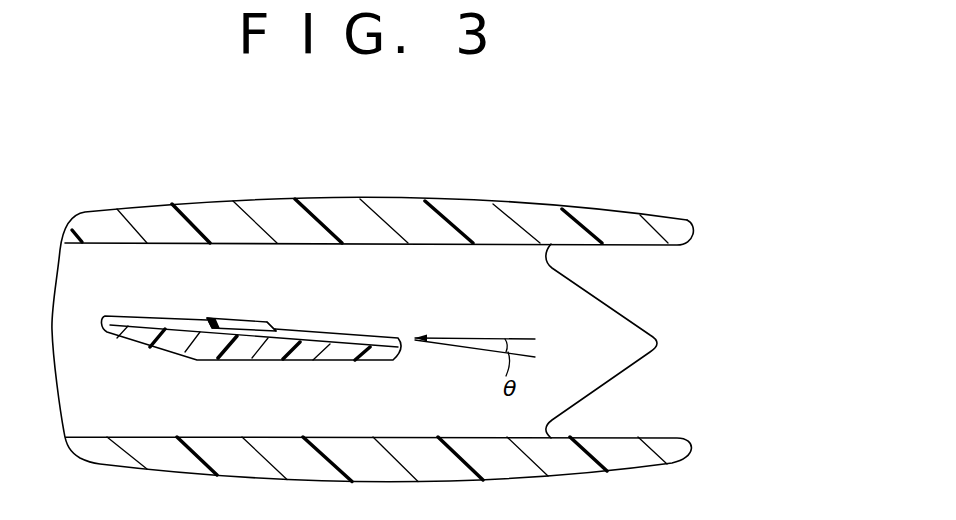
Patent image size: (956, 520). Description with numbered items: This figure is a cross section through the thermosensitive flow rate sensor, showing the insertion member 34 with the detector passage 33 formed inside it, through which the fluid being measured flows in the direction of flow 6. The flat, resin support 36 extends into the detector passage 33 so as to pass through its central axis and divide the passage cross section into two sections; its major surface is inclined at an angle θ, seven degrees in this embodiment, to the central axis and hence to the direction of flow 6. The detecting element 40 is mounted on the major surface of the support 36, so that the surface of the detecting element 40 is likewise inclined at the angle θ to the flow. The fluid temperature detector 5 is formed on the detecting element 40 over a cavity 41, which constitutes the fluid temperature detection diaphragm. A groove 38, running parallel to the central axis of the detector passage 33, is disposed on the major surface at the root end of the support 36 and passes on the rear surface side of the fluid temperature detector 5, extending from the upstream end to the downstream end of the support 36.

The detector passage 33 is at (574, 307).
The insertion member 34 is at (485, 200).
The support 36 is at (163, 357).
The groove 38 is at (337, 332).
The detecting element 40 is at (280, 312).
The fluid temperature detector 5 is at (240, 310).
The cavity 41 is at (222, 308).
The direction of flow 6 is at (480, 337).